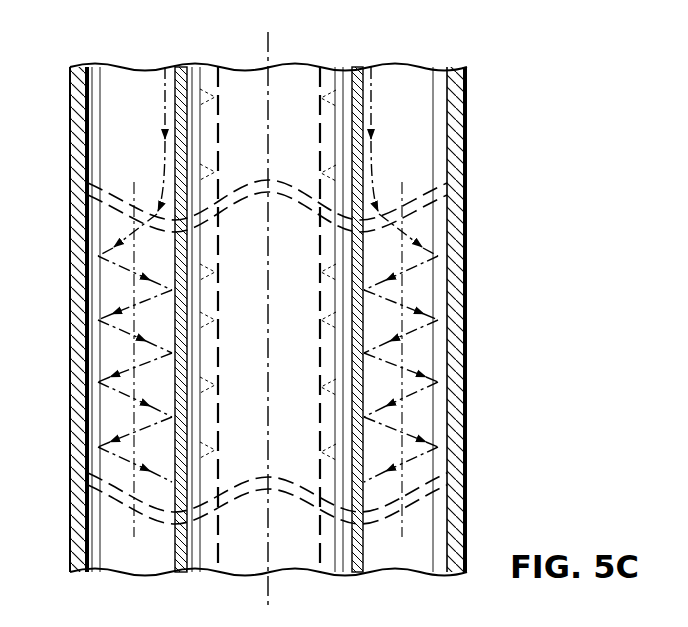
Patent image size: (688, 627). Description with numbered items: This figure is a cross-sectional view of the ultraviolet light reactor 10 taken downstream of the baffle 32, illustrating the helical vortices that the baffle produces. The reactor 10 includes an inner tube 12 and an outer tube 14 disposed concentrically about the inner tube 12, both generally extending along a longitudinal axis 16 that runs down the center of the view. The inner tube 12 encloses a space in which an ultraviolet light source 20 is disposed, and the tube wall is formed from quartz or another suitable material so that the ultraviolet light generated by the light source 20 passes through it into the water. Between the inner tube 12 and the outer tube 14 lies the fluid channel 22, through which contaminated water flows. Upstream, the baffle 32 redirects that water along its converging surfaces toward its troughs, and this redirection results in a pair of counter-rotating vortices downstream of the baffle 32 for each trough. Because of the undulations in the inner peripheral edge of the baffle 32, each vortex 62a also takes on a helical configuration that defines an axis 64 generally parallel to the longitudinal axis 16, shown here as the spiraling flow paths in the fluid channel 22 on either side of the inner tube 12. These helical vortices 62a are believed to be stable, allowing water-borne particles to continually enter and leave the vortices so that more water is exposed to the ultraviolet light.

The ultraviolet light reactor 10 is at (494, 138).
The inner tube 12 is at (190, 77).
The outer tube 14 is at (469, 94).
The longitudinal axis 16 is at (271, 35).
The ultraviolet light source 20 is at (324, 80).
The fluid channel 22 is at (98, 113).
The baffle 32 is at (415, 191).
The vortex 62a is at (122, 249).
The axis 64 is at (131, 295).